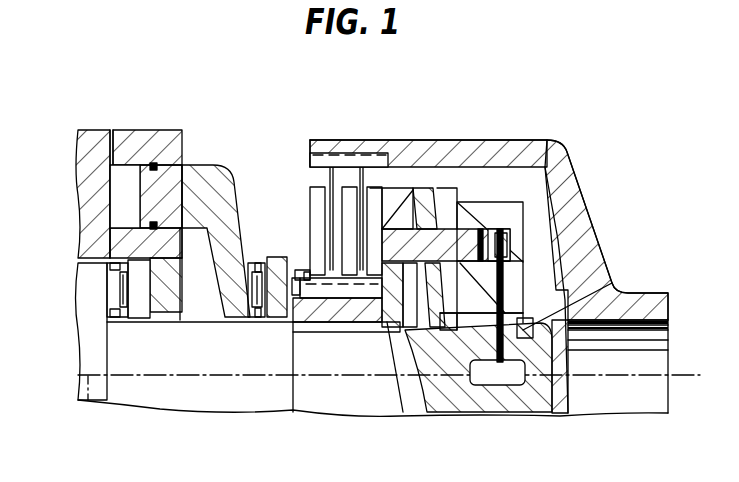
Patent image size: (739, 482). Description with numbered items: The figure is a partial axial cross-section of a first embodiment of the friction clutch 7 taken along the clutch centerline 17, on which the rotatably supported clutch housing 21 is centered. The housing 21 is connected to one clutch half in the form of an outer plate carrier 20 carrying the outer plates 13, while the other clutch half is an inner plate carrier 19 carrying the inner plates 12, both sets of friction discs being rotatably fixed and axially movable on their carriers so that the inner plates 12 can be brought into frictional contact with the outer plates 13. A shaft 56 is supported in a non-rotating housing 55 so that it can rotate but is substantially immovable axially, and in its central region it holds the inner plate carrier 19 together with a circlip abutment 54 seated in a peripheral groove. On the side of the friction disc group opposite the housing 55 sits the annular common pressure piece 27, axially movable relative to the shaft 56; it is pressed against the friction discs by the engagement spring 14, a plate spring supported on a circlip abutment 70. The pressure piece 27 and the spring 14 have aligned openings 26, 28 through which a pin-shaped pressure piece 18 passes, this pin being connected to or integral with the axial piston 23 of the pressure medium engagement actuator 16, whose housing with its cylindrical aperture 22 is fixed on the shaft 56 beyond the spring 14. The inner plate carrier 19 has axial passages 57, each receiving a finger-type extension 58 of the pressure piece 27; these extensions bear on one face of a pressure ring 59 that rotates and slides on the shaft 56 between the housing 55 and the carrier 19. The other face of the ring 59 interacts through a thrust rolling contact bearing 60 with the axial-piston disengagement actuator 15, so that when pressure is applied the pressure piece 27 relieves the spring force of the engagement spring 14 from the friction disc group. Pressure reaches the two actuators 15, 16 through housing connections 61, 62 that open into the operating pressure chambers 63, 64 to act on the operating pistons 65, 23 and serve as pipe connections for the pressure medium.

The friction clutch 7 is at (290, 172).
The inner plates 12 is at (372, 218).
The outer plates 13 is at (334, 176).
The engagement spring 14 is at (423, 188).
The disengagement actuator 15 is at (187, 150).
The engagement actuator 16 is at (550, 186).
The clutch centerline 17 is at (88, 400).
The pin-shaped pressure piece 18 is at (408, 412).
The inner plate carrier 19 is at (323, 298).
The outer plate carrier 20 is at (329, 148).
The clutch housing 21 is at (594, 248).
The cylindrical aperture 22 is at (488, 206).
The axial piston 23 is at (505, 284).
The opening 26 is at (468, 204).
The common pressure piece 27 is at (401, 184).
The opening 28 is at (456, 186).
The abutment 54 is at (302, 270).
The housing 55 is at (148, 134).
The shaft 56 is at (177, 371).
The axial passages 57 is at (370, 310).
The finger-type extension 58 is at (352, 310).
The pressure ring 59 is at (278, 320).
The thrust rolling contact bearing 60 is at (258, 318).
The housing connection 61 is at (111, 130).
The housing connection 62 is at (612, 283).
The operating pressure chamber 63 is at (134, 208).
The operating pressure chamber 64 is at (500, 240).
The operating piston 65 is at (153, 186).
The abutment 70 is at (463, 386).